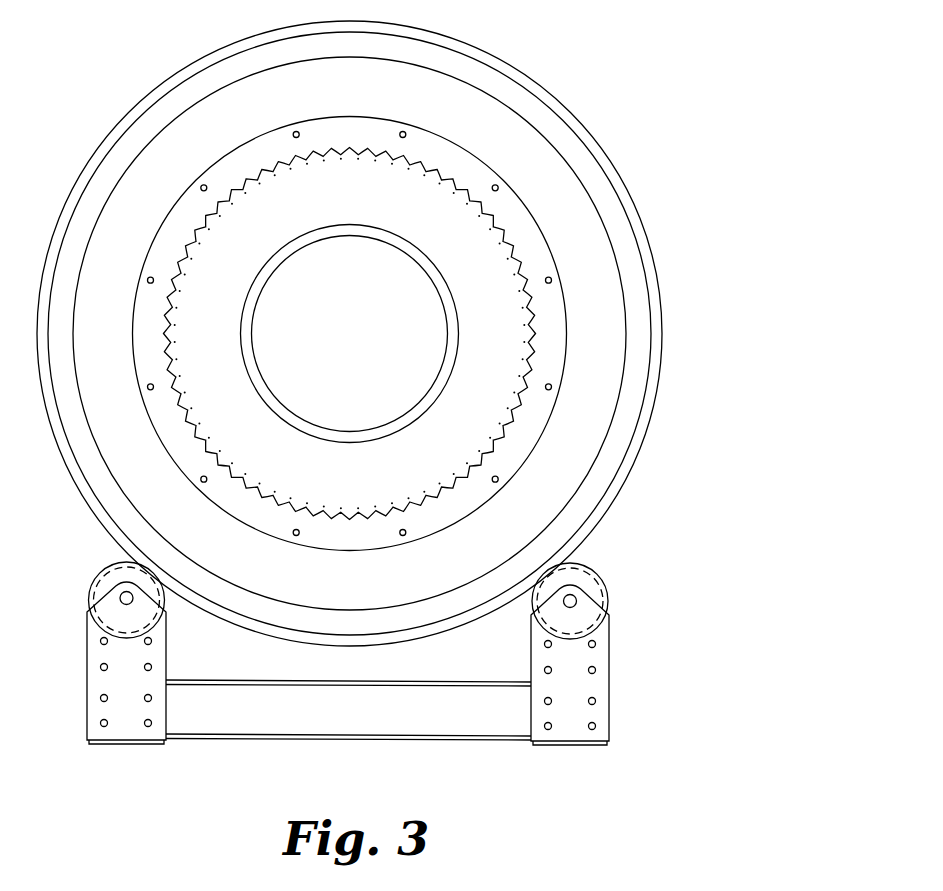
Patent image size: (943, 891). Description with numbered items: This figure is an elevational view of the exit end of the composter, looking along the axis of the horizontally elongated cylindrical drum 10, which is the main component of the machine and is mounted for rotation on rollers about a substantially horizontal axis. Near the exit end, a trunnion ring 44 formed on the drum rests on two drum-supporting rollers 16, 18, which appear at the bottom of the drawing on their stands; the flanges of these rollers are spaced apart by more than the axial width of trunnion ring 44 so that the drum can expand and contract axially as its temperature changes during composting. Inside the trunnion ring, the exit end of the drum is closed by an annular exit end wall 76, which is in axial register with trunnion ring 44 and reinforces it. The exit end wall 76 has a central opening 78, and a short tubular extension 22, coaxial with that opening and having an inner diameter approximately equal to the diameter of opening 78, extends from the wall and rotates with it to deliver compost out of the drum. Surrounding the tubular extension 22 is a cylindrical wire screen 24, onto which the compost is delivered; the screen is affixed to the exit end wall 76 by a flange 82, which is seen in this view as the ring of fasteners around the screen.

The cylindrical drum 10 is at (592, 134).
The trunnion ring 44 is at (648, 407).
The exit end wall 76 is at (617, 353).
The flange 82 is at (523, 441).
The cylindrical wire screen 24 is at (518, 252).
The tubular extension 22 is at (460, 333).
The central opening 78 is at (387, 273).
The roller 16 is at (88, 585).
The roller 18 is at (610, 588).